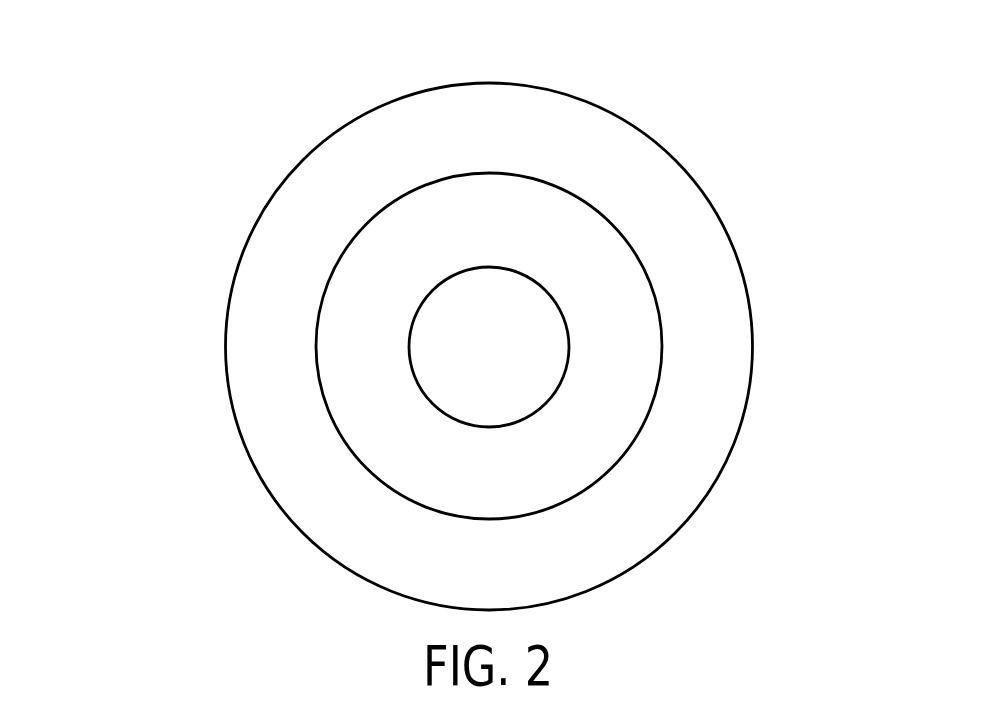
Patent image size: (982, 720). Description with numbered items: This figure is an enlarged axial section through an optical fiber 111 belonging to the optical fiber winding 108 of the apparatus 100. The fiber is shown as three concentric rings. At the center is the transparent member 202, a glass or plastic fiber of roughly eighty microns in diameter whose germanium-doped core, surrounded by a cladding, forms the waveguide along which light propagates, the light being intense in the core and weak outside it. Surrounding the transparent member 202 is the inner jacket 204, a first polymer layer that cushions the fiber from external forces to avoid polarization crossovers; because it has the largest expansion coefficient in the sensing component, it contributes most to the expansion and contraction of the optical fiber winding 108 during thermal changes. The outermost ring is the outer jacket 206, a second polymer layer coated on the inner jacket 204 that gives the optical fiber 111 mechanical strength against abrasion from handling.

The apparatus 100 is at (196, 109).
The optical fiber winding 108 is at (150, 432).
The optical fiber 111 is at (753, 348).
The transparent member 202 is at (436, 350).
The inner jacket 204 is at (388, 278).
The outer jacket 206 is at (284, 250).